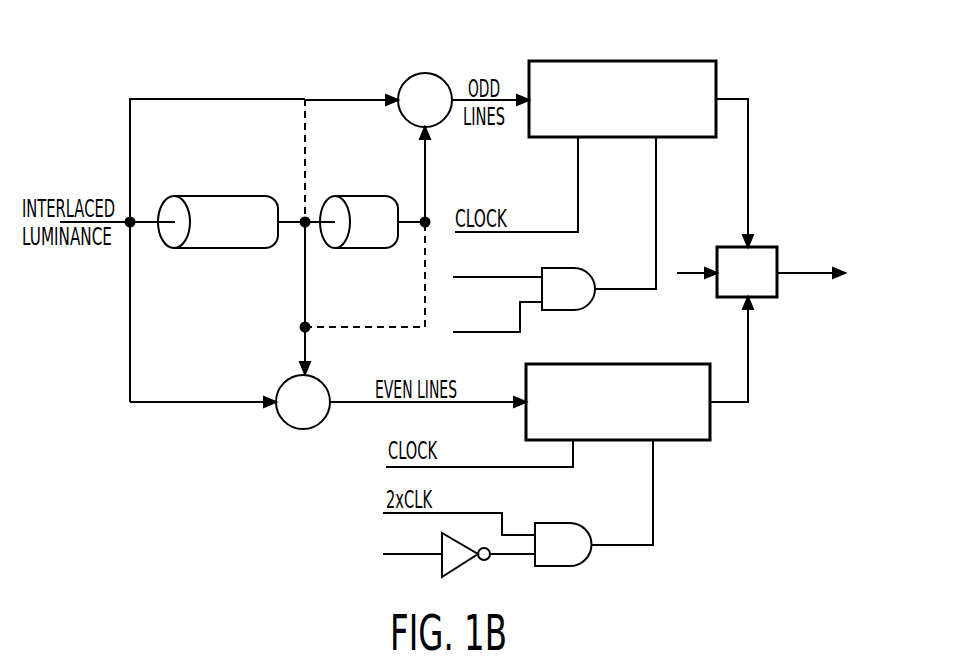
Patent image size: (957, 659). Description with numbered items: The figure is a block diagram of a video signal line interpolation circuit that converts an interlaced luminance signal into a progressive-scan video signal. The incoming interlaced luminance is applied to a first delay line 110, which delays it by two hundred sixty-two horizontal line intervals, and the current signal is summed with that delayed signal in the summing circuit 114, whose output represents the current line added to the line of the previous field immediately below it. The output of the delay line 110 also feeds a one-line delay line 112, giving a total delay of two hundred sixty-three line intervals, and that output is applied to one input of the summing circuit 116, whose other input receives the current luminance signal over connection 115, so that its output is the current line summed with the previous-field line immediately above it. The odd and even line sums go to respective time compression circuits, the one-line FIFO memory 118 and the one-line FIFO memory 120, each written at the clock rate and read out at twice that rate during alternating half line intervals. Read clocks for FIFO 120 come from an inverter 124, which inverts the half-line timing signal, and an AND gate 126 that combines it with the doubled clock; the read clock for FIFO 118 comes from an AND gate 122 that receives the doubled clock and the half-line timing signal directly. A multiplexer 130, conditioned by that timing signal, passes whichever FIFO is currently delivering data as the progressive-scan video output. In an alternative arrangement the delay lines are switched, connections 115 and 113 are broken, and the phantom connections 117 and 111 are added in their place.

The 262H delay line 110 is at (200, 249).
The connection 111 is at (308, 147).
The 1H delay line 112 is at (350, 249).
The connection 113 is at (303, 280).
The summing circuit 114 is at (283, 421).
The connection 115 is at (228, 98).
The summing circuit 116 is at (405, 80).
The connection 117 is at (421, 276).
The 1H FIFO memory 118 is at (613, 61).
The 1H FIFO memory 120 is at (690, 443).
The AND gate 122 is at (568, 303).
The inverter 124 is at (440, 566).
The AND gate 126 is at (570, 560).
The multiplexer 130 is at (760, 298).